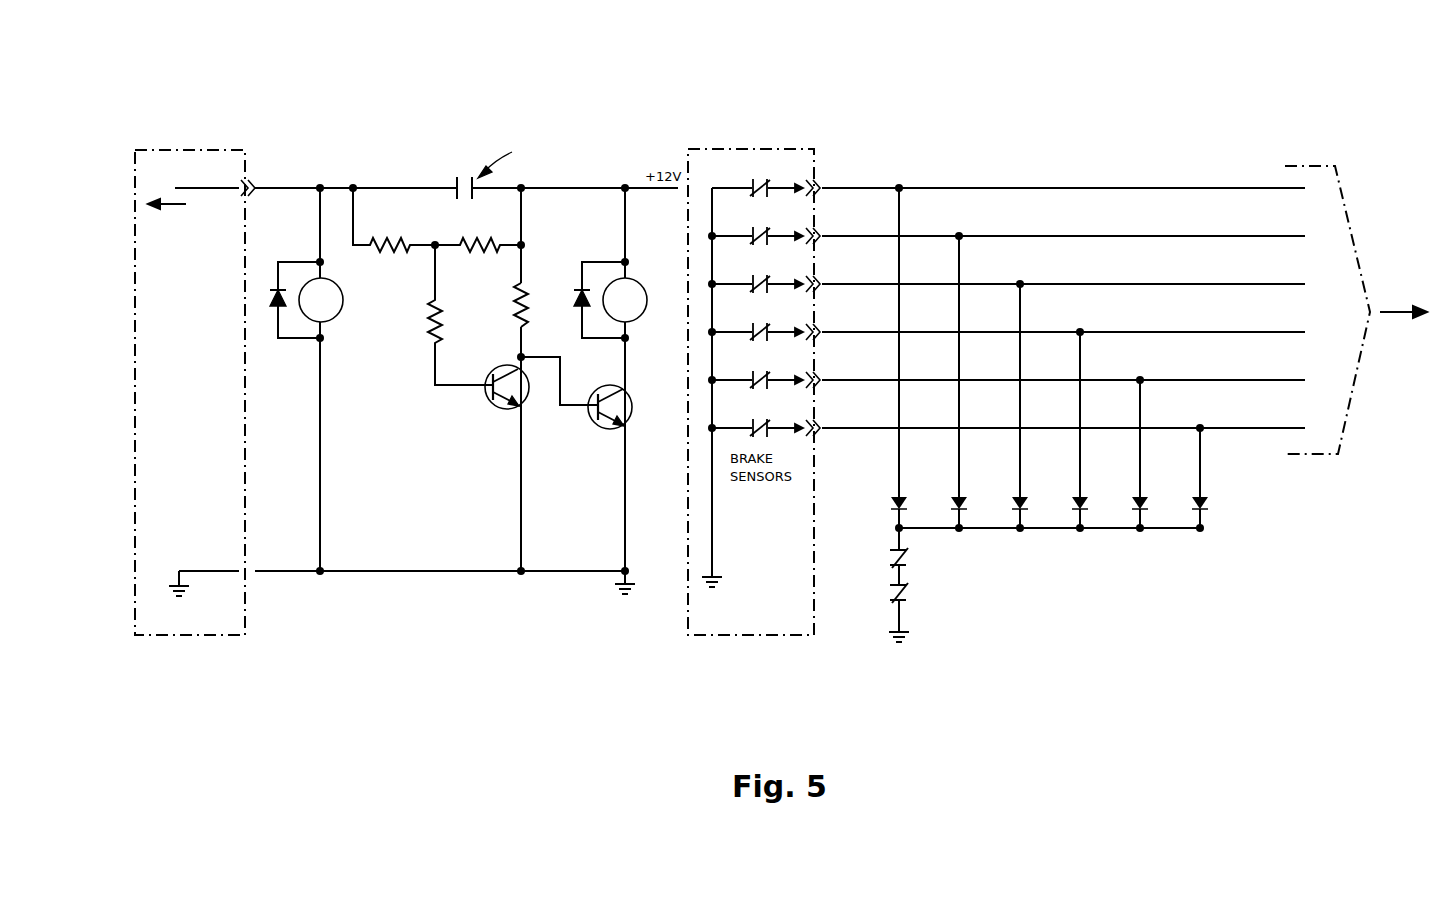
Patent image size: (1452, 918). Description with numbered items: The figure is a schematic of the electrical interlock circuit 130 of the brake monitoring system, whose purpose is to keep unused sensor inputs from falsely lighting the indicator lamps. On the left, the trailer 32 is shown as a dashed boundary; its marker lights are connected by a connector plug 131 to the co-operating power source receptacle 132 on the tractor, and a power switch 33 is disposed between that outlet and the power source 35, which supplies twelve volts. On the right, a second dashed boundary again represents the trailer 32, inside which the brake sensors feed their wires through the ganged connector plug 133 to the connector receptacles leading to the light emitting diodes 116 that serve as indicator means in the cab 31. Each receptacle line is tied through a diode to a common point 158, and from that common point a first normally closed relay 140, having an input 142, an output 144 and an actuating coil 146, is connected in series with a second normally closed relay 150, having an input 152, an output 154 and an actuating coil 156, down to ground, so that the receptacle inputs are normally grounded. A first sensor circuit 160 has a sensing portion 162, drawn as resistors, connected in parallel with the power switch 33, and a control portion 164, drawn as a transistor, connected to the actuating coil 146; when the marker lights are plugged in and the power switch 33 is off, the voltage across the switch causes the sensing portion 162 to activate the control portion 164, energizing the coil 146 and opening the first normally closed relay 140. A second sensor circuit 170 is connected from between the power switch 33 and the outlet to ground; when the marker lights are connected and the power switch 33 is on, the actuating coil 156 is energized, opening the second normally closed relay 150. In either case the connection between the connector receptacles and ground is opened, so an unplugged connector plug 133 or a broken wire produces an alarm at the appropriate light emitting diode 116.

The cab 31 is at (255, 180).
The trailer 32 is at (235, 625).
The power switch 33 is at (461, 175).
The power source 35 is at (662, 160).
The light emitting diode 116 is at (752, 190).
The electrical interlock circuit 130 is at (988, 130).
The connector plug 131 is at (236, 184).
The power source receptacle 132 is at (806, 192).
The connector plug 133 is at (822, 192).
The first normally closed relay 140 is at (893, 558).
The input 142 is at (895, 541).
The output 144 is at (897, 573).
The actuating coil 146 is at (634, 280).
The second normally closed relay 150 is at (912, 600).
The input 152 is at (905, 575).
The output 154 is at (905, 618).
The actuating coil 156 is at (343, 297).
The common point 158 is at (1058, 530).
The first sensor circuit 160 is at (426, 422).
The sensing portion 162 is at (412, 196).
The control portion 164 is at (590, 450).
The second sensor circuit 170 is at (297, 372).